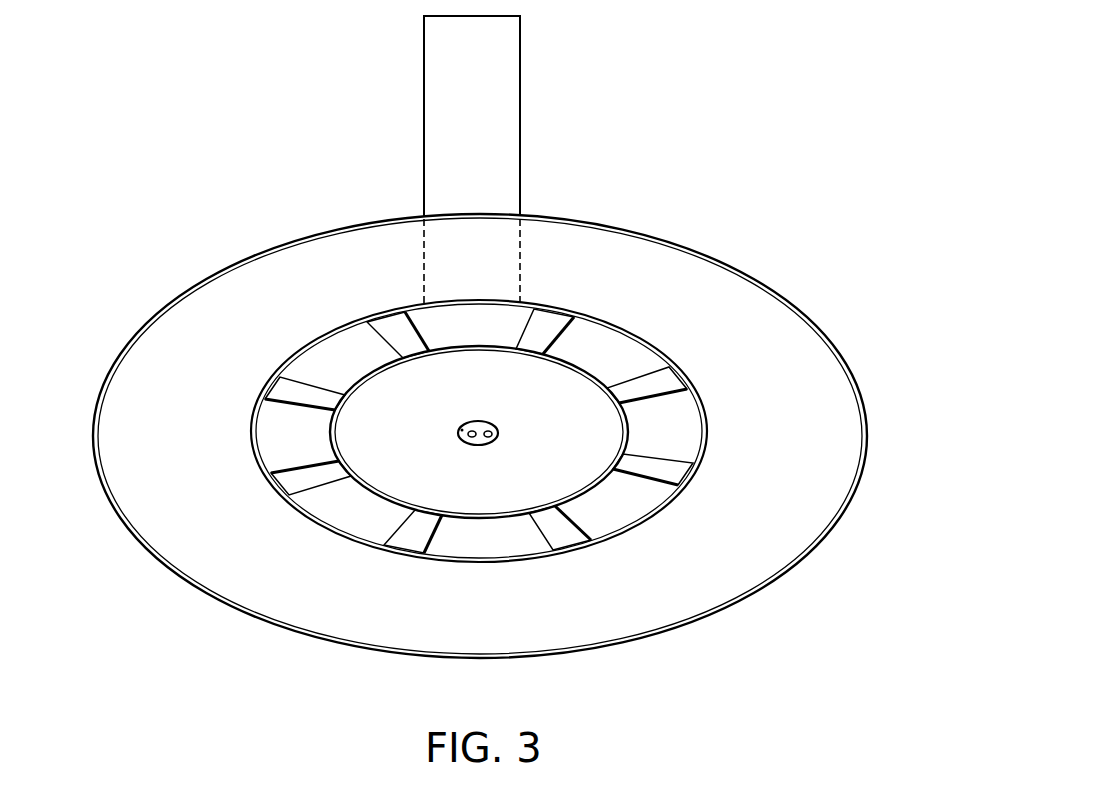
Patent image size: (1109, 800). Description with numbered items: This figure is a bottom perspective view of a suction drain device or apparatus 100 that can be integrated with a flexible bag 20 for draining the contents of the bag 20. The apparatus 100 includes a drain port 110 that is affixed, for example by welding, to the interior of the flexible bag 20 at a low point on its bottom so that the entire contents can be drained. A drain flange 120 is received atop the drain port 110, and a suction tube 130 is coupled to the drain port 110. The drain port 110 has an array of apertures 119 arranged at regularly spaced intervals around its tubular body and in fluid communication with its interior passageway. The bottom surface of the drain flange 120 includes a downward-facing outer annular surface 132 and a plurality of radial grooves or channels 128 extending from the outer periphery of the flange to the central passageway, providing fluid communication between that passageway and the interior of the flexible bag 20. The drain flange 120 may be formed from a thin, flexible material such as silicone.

The flexible bag 20 is at (728, 540).
The suction drain device or apparatus 100 is at (688, 68).
The drain port 110 is at (575, 432).
The apertures 119 is at (488, 440).
The drain flange 120 is at (600, 352).
The radial grooves or channels 128 is at (388, 325).
The suction tube 130 is at (507, 125).
The outer annular surface 132 is at (623, 505).